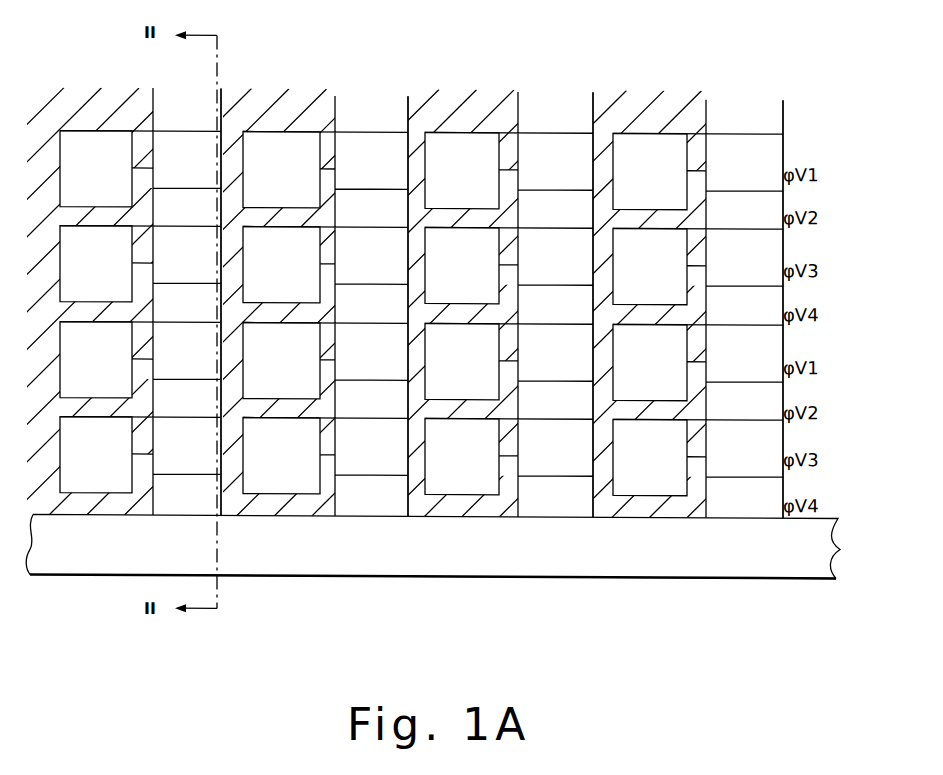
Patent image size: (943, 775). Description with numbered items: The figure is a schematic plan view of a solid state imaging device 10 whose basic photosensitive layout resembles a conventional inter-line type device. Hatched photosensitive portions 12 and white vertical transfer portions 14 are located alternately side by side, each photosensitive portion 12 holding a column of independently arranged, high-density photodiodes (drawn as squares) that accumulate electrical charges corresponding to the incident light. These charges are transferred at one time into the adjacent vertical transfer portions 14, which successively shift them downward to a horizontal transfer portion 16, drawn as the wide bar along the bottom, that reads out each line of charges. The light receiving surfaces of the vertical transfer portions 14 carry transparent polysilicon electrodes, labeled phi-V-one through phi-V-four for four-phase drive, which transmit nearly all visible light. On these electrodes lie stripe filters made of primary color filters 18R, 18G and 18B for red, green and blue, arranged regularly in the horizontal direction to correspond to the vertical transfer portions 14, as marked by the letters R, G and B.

The solid state imaging device 10 is at (341, 53).
The photosensitive portion 12 is at (661, 84).
The vertical transfer portion 14 is at (760, 84).
The horizontal transfer portion 16 is at (840, 546).
The red primary color filter 18R is at (767, 110).
The green primary color filter 18G is at (402, 92).
The blue primary color filter 18B is at (583, 100).